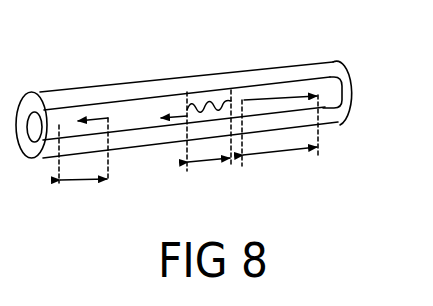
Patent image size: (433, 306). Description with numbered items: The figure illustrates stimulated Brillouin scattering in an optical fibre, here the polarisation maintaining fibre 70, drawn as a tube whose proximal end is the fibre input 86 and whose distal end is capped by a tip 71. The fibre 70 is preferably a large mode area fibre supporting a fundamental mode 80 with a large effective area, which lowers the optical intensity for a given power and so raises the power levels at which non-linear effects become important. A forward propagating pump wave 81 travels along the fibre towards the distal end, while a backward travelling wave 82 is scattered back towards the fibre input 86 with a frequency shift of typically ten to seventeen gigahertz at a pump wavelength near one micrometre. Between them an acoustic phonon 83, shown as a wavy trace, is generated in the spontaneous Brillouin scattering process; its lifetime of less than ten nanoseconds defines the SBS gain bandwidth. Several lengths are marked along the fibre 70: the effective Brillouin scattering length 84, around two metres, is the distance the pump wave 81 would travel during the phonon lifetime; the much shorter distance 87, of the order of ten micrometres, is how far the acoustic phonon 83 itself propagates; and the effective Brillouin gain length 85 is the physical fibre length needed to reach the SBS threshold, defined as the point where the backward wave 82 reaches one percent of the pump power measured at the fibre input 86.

The polarisation maintaining fibre 70 is at (147, 81).
The distal tip 71 is at (333, 76).
The fundamental mode 80 is at (357, 95).
The forward propagating pump wave 81 is at (288, 96).
The backward travelling wave 82 is at (128, 113).
The acoustic phonon 83 is at (197, 108).
The effective Brillouin scattering length 84 is at (292, 151).
The effective Brillouin gain length 85 is at (100, 197).
The fibre input 86 is at (32, 105).
The acoustic phonon propagation distance 87 is at (228, 178).